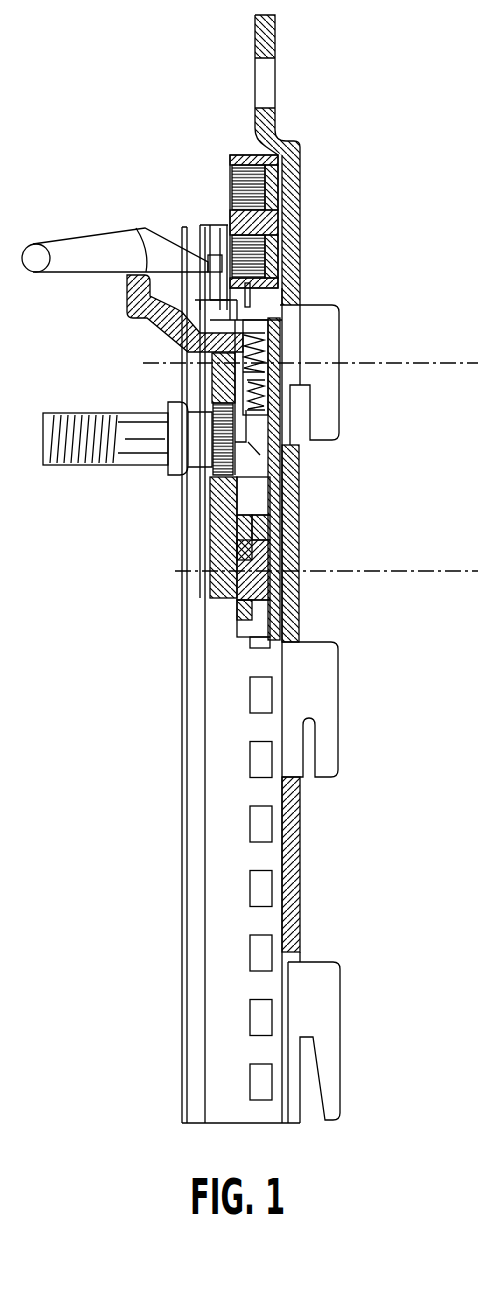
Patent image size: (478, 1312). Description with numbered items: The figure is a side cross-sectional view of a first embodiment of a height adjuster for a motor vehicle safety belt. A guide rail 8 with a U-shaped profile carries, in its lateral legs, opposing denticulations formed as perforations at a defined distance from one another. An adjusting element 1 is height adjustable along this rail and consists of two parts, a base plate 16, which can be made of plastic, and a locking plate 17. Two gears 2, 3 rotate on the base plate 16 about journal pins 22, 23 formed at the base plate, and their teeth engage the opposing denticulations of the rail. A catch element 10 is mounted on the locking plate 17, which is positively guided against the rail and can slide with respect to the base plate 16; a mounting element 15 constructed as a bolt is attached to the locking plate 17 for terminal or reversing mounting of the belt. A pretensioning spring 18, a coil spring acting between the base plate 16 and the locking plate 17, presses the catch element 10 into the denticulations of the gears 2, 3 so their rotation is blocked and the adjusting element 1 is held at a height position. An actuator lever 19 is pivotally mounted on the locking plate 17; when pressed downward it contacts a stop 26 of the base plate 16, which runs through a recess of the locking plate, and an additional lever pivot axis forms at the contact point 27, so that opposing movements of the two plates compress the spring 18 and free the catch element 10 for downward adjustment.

The adjusting element 1 is at (192, 548).
The gear 2 is at (240, 607).
The gear 3 is at (260, 642).
The guide rail 8 is at (215, 852).
The catch element 10 is at (257, 493).
The mounting element 15 is at (82, 427).
The base plate 16 is at (274, 443).
The locking plate 17 is at (222, 526).
The pretensioning spring 18 is at (292, 347).
The actuator lever 19 is at (88, 247).
The journal pin 22 is at (242, 578).
The journal pin 23 is at (258, 590).
The stop 26 is at (127, 296).
The contact point 27 is at (134, 226).